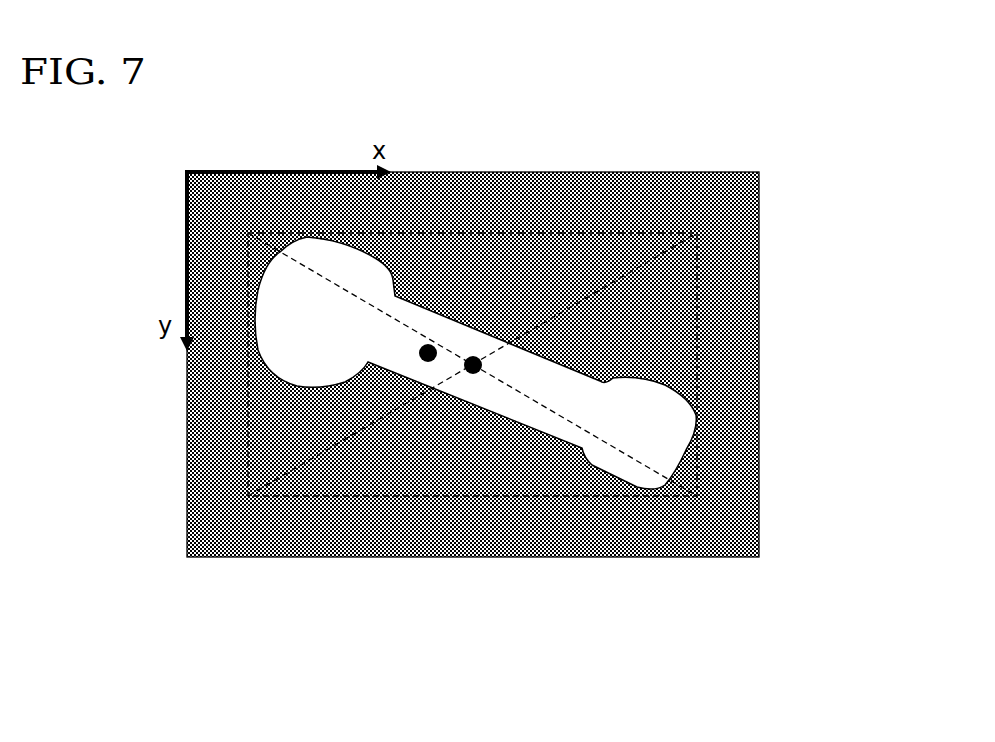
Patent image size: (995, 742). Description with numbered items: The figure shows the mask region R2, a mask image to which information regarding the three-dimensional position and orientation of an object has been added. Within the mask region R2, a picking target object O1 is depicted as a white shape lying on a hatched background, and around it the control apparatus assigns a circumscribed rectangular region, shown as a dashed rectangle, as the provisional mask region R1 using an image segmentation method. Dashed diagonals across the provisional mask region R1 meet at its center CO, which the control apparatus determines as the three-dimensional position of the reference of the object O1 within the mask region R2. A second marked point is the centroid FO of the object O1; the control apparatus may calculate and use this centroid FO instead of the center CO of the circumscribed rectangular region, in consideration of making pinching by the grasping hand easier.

The provisional mask region R1 is at (706, 302).
The mask region R2 is at (759, 332).
The object O1 is at (693, 418).
The center of the circumscribed rectangular region CO is at (476, 357).
The centroid of the object FO is at (428, 362).